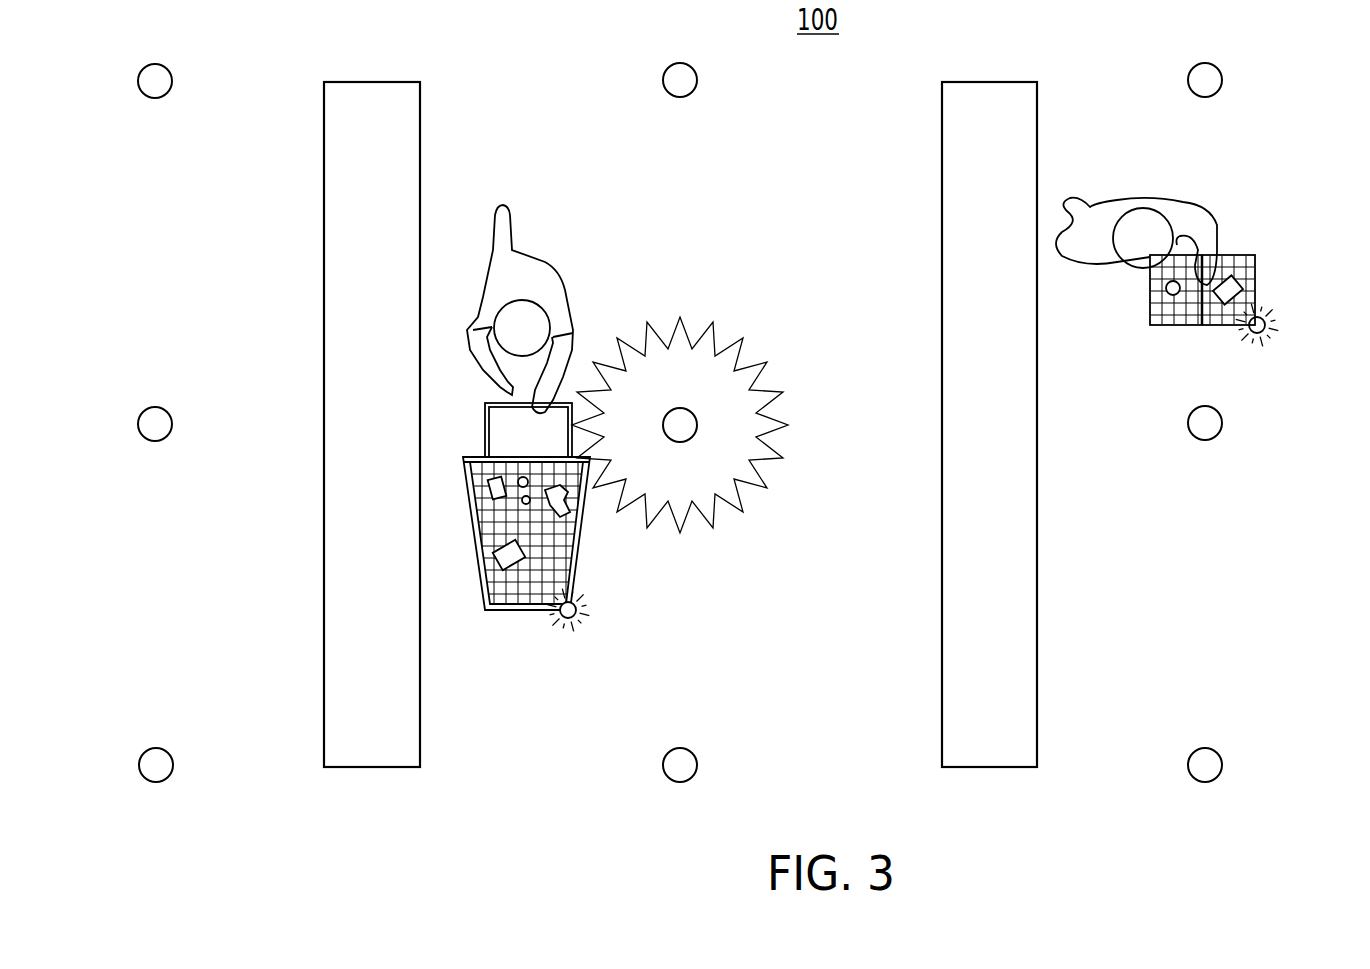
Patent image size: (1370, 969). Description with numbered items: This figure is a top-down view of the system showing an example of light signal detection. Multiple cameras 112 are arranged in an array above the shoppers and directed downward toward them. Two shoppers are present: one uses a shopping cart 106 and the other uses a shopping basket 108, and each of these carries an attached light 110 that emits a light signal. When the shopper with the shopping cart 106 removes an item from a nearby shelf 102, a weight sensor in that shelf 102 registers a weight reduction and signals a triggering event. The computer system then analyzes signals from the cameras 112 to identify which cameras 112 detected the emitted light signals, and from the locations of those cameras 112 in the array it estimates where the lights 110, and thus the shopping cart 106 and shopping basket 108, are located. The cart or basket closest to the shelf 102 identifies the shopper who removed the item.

The shelf 102 is at (349, 368).
The shopping cart 106 is at (582, 540).
The shopping basket 108 is at (1257, 265).
The light 110 is at (575, 616).
The camera 112 is at (155, 98).